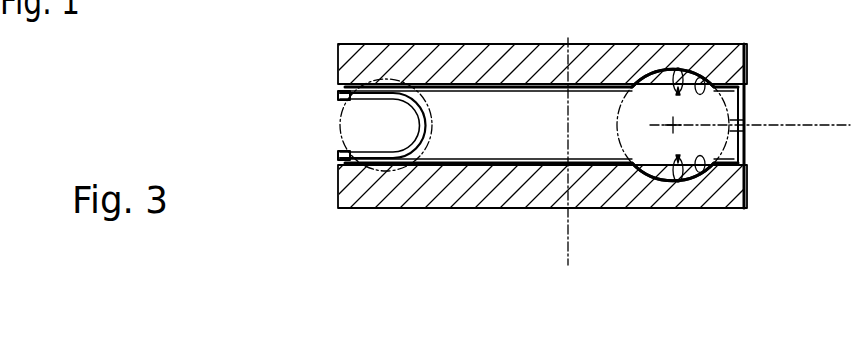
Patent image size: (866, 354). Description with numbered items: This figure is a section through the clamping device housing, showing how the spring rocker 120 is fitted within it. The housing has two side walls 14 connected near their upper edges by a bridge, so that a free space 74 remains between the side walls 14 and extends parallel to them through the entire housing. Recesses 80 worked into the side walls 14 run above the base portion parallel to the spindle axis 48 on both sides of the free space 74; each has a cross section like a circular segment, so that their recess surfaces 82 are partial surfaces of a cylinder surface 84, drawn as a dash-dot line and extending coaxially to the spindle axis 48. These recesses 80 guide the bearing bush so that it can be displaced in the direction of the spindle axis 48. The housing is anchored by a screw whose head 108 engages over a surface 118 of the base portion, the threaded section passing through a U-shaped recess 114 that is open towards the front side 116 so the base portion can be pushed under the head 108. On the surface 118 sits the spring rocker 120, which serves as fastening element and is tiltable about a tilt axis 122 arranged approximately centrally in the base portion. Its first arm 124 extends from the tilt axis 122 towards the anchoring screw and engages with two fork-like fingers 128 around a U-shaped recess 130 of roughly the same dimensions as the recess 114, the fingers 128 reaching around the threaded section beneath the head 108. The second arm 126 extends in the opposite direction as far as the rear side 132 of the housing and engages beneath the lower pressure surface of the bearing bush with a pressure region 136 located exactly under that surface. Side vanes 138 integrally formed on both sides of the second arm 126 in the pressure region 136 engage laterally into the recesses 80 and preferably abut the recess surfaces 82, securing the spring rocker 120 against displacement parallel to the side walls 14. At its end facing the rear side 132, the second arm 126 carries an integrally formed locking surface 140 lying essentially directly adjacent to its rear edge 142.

The side walls 14 is at (493, 56).
The spindle axis 48 is at (748, 118).
The free space 74 is at (606, 139).
The recesses 80 is at (681, 68).
The recess surfaces 82 is at (714, 80).
The cylinder surface 84 is at (750, 134).
The head 108 is at (340, 125).
The U-shaped recess 114 is at (352, 106).
The front side 116 is at (336, 160).
The surface 118 is at (362, 170).
The spring rocker 120 is at (551, 100).
The tilt axis 122 is at (572, 250).
The first arm 124 is at (453, 108).
The second arm 126 is at (594, 105).
The fork-like fingers 128 is at (338, 90).
The U-shaped recess 130 is at (356, 138).
The rear side 132 is at (750, 162).
The pressure region 136 is at (748, 64).
The side vanes 138 is at (656, 72).
The locking surface 140 is at (748, 98).
The rear edge 142 is at (748, 148).